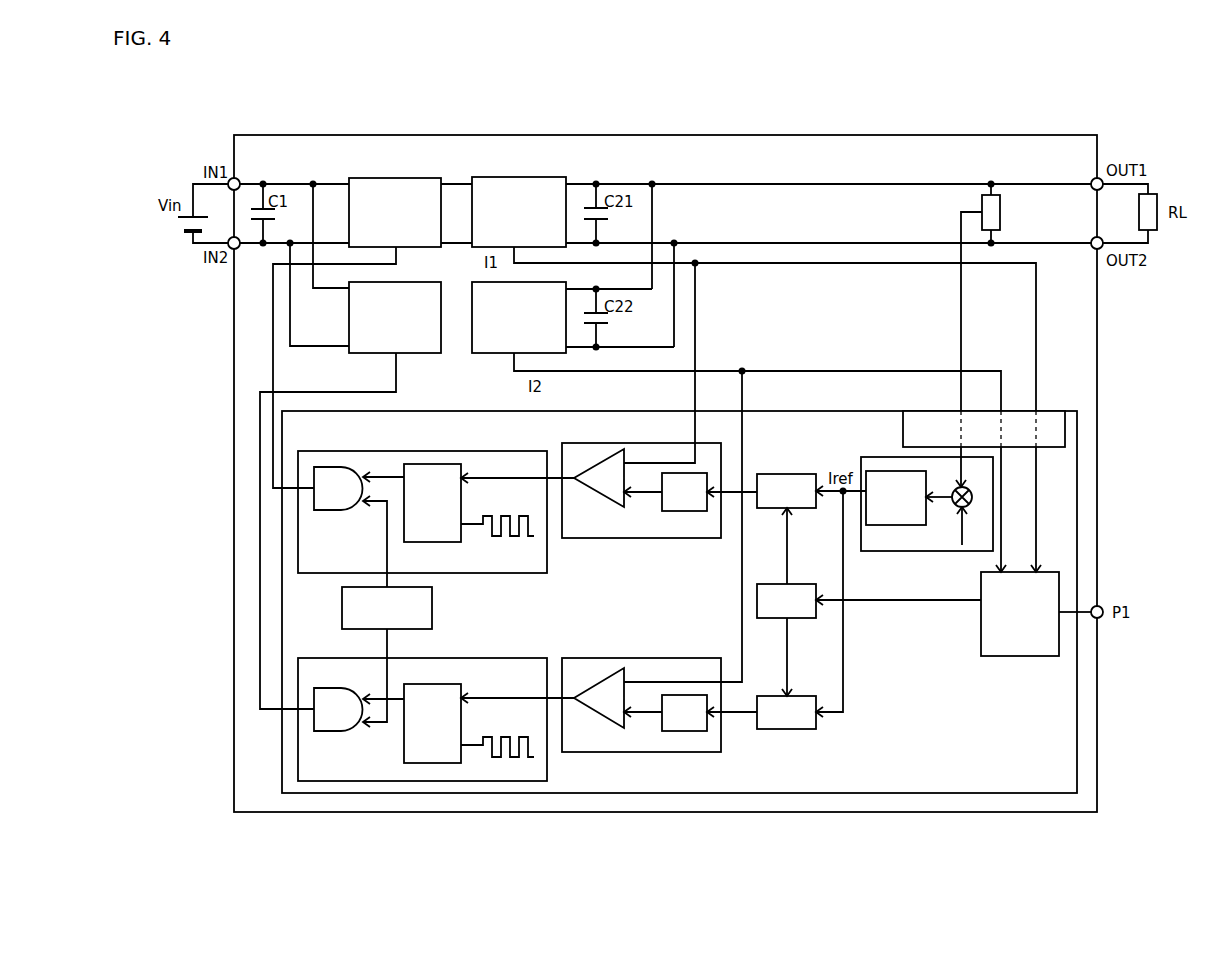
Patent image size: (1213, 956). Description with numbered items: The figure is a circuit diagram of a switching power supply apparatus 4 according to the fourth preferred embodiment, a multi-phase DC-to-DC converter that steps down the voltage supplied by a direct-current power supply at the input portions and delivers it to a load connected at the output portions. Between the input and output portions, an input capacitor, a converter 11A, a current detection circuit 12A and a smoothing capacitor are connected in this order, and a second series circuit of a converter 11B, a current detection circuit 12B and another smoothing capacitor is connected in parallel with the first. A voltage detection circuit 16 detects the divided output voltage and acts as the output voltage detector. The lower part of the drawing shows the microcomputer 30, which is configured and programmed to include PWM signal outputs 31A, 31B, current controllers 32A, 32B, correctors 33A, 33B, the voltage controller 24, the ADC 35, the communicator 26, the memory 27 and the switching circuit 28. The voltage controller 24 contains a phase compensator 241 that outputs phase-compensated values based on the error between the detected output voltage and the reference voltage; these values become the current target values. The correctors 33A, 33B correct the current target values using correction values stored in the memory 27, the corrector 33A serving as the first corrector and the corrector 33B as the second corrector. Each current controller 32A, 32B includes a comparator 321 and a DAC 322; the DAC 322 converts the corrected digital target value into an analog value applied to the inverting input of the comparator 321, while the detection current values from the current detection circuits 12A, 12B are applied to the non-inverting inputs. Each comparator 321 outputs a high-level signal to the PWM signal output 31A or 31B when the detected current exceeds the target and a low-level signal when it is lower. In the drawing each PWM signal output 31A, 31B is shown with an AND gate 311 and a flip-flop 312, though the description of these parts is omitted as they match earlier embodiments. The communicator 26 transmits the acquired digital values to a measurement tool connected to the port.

The switching power supply apparatus 4 is at (234, 146).
The converter 11A is at (360, 178).
The converter 11B is at (362, 353).
The current detection circuit 12A is at (490, 177).
The current detection circuit 12B is at (492, 353).
The voltage detection circuit 16 is at (984, 197).
The voltage controller 24 is at (913, 501).
The phase compensator 241 is at (890, 525).
The communicator 26 is at (981, 658).
The memory 27 is at (798, 584).
The switching circuit 28 is at (432, 610).
The microcomputer 30 is at (1077, 530).
The PWM signal output 31A is at (422, 591).
The PWM signal output 31B is at (326, 658).
The AND gate 311 is at (352, 512).
The flip-flop 312 is at (420, 542).
The current controller 32A is at (647, 584).
The current controller 32B is at (565, 658).
The comparator 321 is at (608, 507).
The DAC 322 is at (662, 507).
The corrector 33A is at (783, 474).
The corrector 33B is at (784, 696).
The ADC 35 is at (1065, 425).